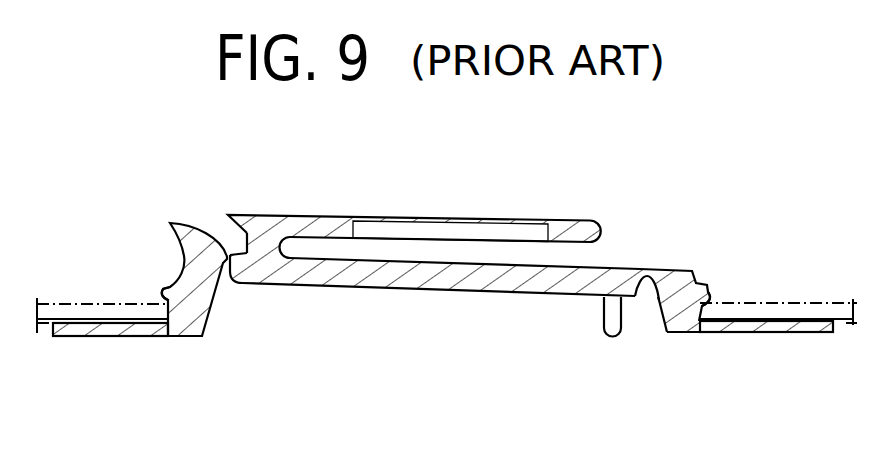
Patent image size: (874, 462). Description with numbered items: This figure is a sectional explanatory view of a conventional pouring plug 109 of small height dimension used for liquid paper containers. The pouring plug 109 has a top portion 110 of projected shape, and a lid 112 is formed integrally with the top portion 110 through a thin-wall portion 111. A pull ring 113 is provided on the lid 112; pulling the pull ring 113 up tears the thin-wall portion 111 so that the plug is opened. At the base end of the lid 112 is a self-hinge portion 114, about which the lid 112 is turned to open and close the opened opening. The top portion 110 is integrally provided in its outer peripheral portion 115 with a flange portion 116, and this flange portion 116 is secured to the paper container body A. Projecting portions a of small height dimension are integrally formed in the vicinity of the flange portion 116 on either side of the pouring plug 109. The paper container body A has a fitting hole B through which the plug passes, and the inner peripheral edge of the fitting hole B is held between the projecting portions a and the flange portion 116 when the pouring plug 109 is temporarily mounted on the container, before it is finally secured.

The pouring plug 109 is at (447, 285).
The top portion 110 is at (652, 270).
The thin-wall portion 111 is at (229, 260).
The lid 112 is at (458, 265).
The pull ring 113 is at (333, 215).
The self-hinge portion 114 is at (642, 285).
The outer peripheral portion 115 is at (182, 262).
The flange portion 116 is at (82, 338).
The projecting portions a is at (161, 292).
The paper container body A is at (67, 300).
The fitting hole B is at (182, 340).